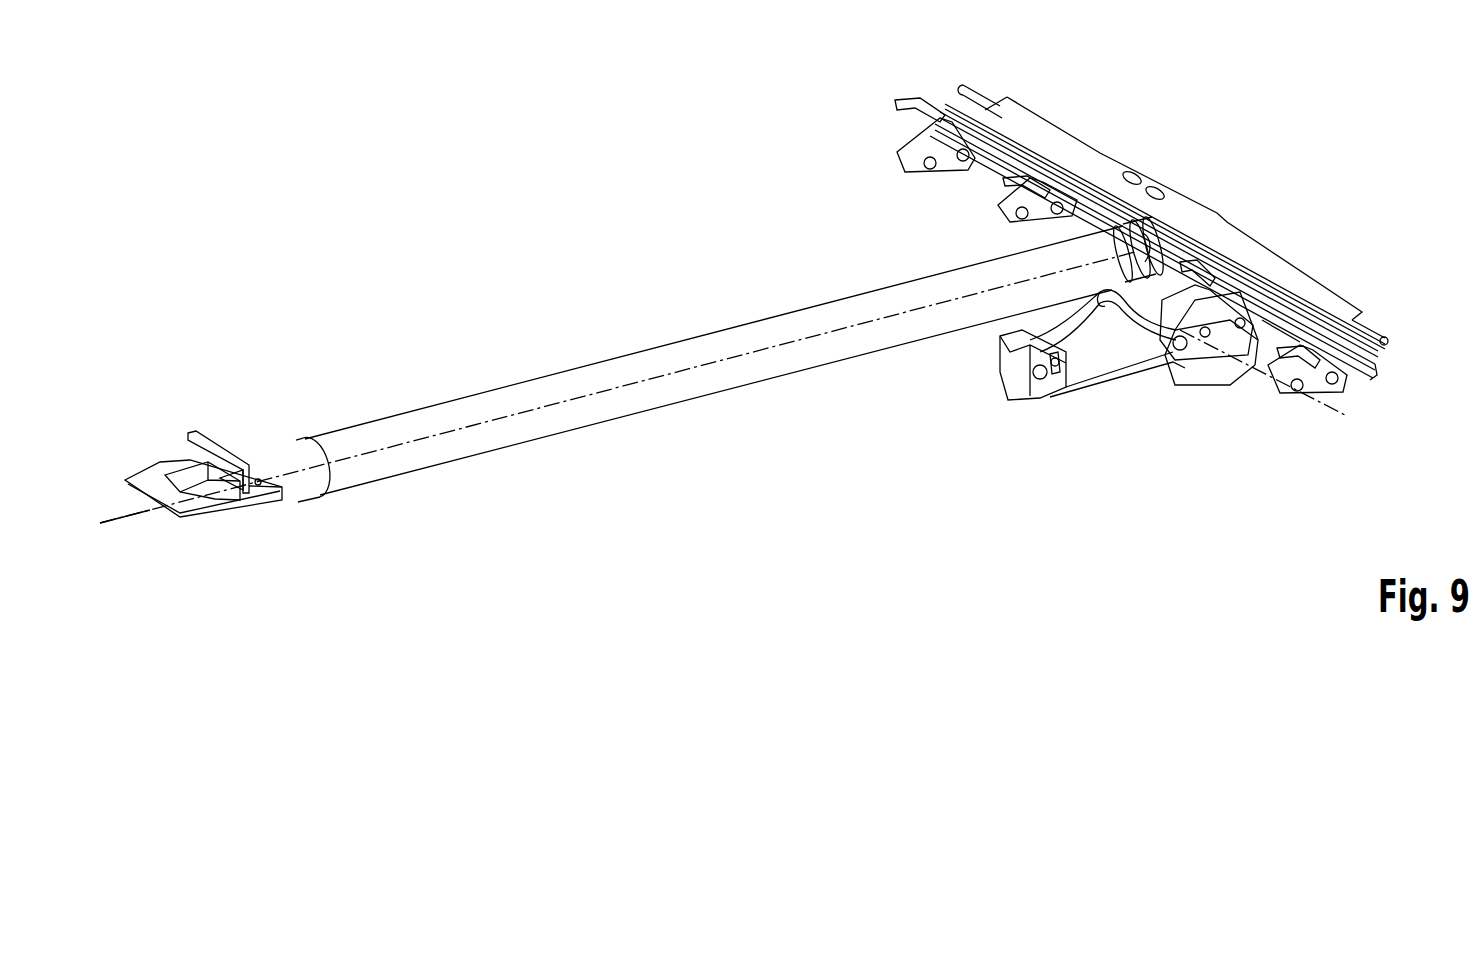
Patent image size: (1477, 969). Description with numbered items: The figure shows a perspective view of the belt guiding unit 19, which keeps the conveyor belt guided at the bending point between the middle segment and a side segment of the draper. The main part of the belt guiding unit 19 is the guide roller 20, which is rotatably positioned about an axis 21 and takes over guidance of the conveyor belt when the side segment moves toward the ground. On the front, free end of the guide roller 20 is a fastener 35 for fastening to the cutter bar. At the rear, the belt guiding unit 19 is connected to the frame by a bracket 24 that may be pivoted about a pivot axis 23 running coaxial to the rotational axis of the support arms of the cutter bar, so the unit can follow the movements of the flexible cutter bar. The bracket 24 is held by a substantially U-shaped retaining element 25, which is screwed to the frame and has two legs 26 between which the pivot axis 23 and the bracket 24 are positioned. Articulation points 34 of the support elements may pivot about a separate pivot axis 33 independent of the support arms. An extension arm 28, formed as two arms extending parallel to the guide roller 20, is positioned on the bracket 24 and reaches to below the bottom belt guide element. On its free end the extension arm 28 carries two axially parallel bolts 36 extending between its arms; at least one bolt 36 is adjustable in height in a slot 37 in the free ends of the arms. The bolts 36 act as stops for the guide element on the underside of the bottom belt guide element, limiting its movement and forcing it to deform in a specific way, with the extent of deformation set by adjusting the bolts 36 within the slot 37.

The belt guiding unit 19 is at (600, 196).
The guide roller 20 is at (497, 386).
The axis 21 is at (130, 521).
The pivot axis 23 is at (1230, 370).
The bracket 24 is at (1155, 385).
The retaining element 25 is at (1290, 318).
The legs 26 is at (1185, 365).
The extension arm 28 is at (1013, 375).
The pivot axis 33 is at (878, 136).
The articulation points 34 is at (930, 140).
The fastener 35 is at (213, 457).
The bolts 36 is at (1015, 325).
The slot 37 is at (1045, 385).